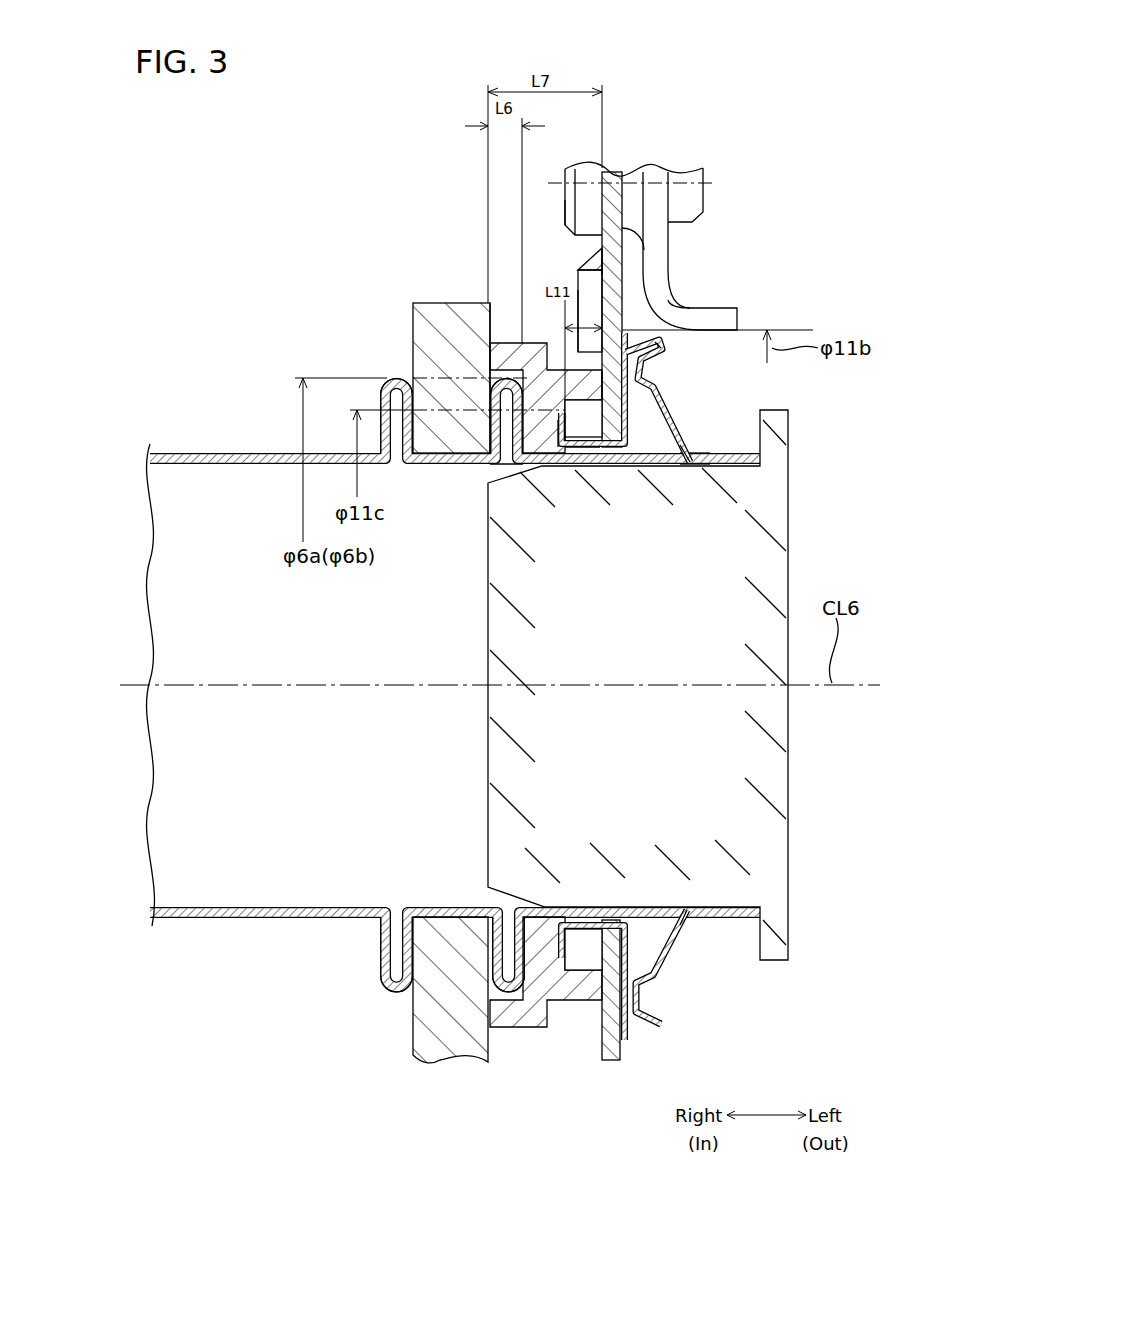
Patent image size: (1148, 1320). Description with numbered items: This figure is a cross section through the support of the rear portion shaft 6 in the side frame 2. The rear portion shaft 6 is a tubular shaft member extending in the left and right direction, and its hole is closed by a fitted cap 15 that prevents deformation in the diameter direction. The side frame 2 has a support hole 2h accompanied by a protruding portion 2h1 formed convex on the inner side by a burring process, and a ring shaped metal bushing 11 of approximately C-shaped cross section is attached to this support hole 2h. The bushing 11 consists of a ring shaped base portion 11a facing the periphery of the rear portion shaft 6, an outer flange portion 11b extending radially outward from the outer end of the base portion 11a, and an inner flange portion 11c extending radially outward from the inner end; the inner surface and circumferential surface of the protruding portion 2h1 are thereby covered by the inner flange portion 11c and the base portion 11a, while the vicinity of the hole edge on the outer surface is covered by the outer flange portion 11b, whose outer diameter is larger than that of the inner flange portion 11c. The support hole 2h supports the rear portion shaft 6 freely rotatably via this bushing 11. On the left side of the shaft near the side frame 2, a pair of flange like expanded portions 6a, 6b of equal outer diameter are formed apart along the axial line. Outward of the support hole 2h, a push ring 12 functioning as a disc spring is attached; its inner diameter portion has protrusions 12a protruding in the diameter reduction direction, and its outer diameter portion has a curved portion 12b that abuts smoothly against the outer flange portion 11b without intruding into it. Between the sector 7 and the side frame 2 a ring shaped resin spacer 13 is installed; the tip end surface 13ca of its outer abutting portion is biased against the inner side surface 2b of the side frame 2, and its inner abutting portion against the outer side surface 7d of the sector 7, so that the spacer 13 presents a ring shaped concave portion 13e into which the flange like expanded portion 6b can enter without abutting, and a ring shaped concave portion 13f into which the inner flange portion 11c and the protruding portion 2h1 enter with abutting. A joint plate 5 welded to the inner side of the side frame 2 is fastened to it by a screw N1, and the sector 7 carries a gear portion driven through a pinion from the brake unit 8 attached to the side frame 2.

The side frame 2 is at (622, 276).
The inner side surface 2b is at (602, 262).
The support hole 2h is at (599, 460).
The protruding portion 2h1 is at (630, 414).
The joint plate 5 is at (565, 300).
The rear portion shaft 6 is at (229, 453).
The flange like expanded portion 6a is at (393, 378).
The flange like expanded portion 6b is at (512, 372).
The sector 7 is at (447, 303).
The outer side surface 7d is at (488, 352).
The brake unit 8 is at (668, 268).
The bushing 11 is at (630, 1037).
The base portion 11a is at (572, 470).
The outer flange portion 11b is at (583, 408).
The inner flange portion 11c is at (540, 468).
The push ring 12 is at (642, 365).
The spring end 12a is at (684, 468).
The curved portion 12b is at (664, 346).
The spacer 13 is at (545, 343).
The tip end surface 13ca is at (632, 357).
The ring shaped concave portion 13e is at (502, 466).
The ring shaped concave portion 13f is at (626, 393).
The cap 15 is at (790, 563).
The screw N1 is at (563, 200).